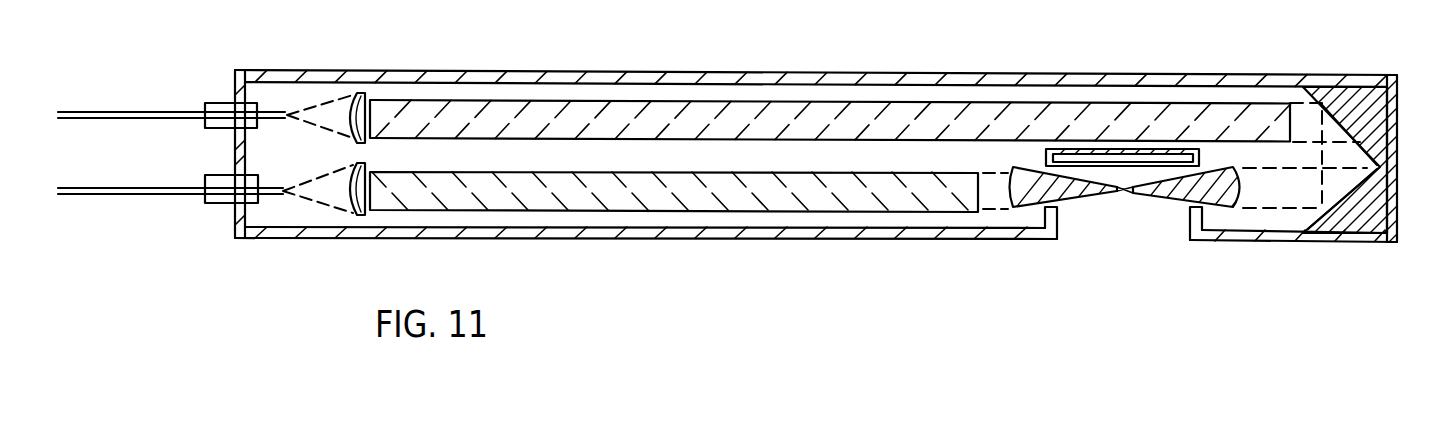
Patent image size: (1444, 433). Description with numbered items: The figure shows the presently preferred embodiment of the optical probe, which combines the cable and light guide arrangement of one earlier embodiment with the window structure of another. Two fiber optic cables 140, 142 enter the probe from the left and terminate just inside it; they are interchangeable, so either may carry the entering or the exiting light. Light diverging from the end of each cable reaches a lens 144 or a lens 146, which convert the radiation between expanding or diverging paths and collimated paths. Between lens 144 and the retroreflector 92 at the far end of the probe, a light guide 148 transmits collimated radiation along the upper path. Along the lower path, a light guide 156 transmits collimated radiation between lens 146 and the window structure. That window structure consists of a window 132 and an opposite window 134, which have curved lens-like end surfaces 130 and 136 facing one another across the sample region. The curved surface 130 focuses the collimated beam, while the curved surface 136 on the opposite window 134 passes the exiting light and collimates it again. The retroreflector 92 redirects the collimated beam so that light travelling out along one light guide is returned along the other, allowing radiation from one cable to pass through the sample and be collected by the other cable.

The retroreflector 92 is at (1397, 97).
The curved surface 130 is at (1244, 177).
The window 132 is at (1204, 207).
The window 134 is at (1047, 210).
The curved surface 136 is at (1008, 197).
The fiber optic cable 140 is at (222, 117).
The fiber optic cable 142 is at (222, 200).
The lens 144 is at (365, 108).
The lens 146 is at (358, 212).
The light guide 148 is at (777, 118).
The light guide 156 is at (755, 197).